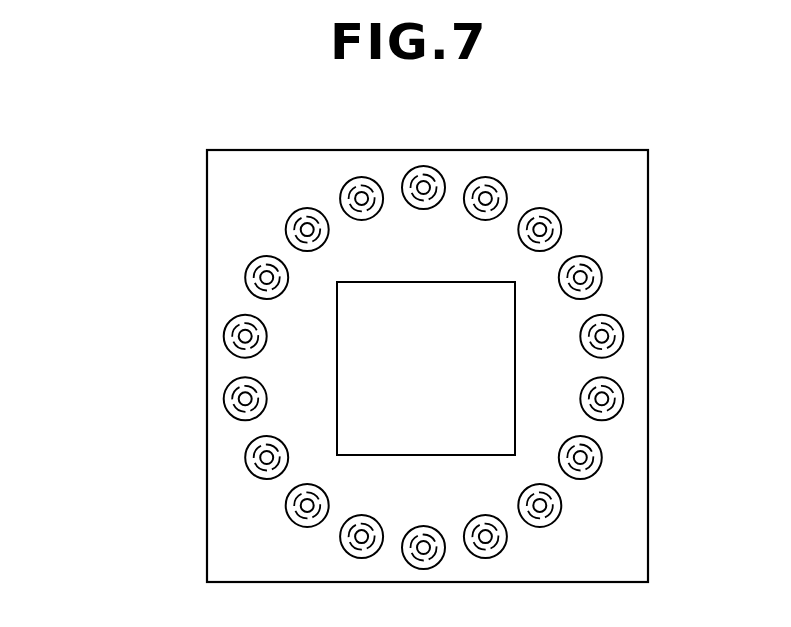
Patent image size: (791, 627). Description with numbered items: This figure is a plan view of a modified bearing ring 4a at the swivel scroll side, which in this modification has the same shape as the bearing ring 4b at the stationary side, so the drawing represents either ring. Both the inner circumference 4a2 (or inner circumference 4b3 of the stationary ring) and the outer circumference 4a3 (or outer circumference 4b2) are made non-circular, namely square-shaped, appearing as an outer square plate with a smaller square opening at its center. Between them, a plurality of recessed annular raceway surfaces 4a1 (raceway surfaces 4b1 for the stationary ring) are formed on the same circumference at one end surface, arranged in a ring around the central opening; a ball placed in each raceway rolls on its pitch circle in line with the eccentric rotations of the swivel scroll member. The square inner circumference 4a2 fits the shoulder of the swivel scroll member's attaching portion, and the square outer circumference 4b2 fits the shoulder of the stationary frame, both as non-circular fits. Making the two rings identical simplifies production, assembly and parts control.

The bearing ring 4a is at (335, 366).
The bearing ring 4b is at (200, 223).
The raceway surfaces 4a1 is at (668, 329).
The raceway surfaces 4b1 is at (623, 333).
The inner circumference 4a2 is at (426, 368).
The inner circumference 4b3 is at (337, 349).
The outer circumference 4a3 is at (149, 345).
The outer circumference 4b2 is at (206, 343).